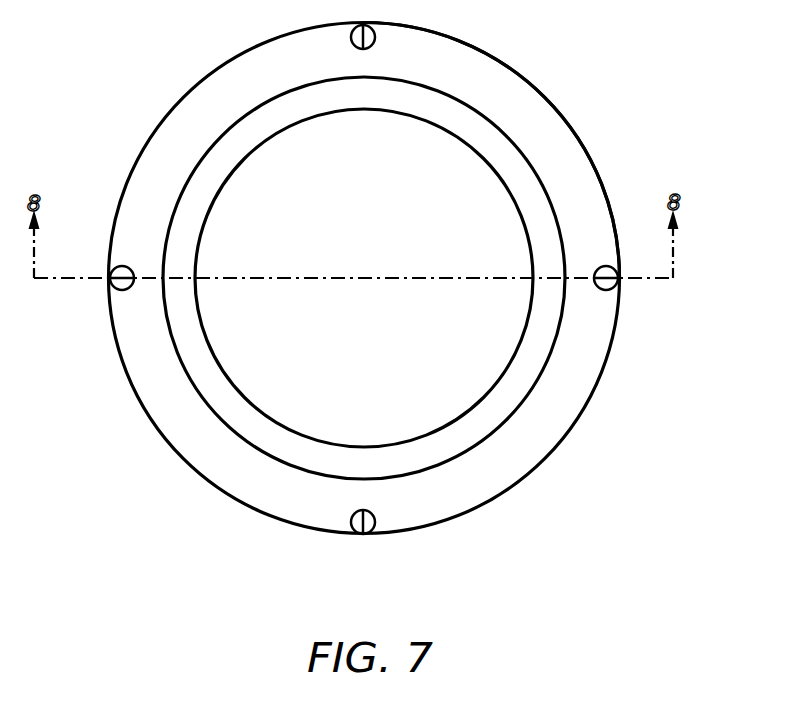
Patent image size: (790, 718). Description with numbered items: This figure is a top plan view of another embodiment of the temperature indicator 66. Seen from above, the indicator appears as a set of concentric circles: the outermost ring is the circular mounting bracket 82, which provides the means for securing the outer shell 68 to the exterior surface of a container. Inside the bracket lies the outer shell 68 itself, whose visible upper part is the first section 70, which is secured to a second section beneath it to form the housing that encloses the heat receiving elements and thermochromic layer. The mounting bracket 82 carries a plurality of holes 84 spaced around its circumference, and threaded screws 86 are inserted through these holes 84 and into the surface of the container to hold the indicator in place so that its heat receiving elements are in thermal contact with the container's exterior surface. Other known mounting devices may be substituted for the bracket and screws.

The temperature indicator 66 is at (379, 268).
The outer shell 68 is at (411, 278).
The circular mounting bracket 82 is at (520, 151).
The first section 70 is at (406, 298).
The holes 84 is at (405, 546).
The threaded screws 86 is at (326, 546).